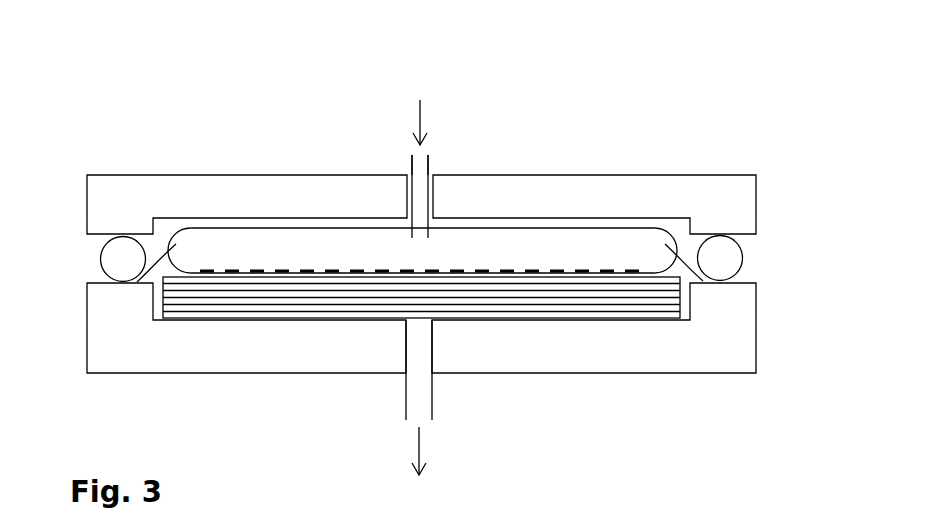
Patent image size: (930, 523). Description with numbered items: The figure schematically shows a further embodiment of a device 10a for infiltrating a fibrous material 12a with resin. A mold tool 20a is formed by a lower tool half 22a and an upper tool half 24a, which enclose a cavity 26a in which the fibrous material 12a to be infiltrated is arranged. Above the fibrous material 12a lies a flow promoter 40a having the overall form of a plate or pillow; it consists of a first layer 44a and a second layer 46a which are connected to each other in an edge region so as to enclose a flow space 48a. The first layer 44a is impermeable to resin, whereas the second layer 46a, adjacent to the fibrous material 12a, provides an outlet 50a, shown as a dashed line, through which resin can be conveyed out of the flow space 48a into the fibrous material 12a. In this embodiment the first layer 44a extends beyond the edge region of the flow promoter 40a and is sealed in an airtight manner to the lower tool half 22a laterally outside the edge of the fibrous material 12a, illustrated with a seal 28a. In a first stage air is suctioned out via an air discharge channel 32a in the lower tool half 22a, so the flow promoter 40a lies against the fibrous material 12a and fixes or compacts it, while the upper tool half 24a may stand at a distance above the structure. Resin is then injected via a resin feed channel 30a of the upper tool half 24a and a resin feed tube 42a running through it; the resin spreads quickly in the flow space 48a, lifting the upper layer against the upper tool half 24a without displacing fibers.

The device for infiltrating a fibrous material 10a is at (170, 78).
The fibrous material 12a is at (330, 300).
The mold tool 20a is at (722, 162).
The lower tool half 22a is at (626, 358).
The upper tool half 24a is at (590, 192).
The cavity 26a is at (168, 232).
The seal 28a is at (723, 267).
The resin feed channel 30a is at (435, 202).
The air discharge channel 32a is at (433, 353).
The flow promoter 40a is at (285, 245).
The resin feed tube 42a is at (429, 167).
The first layer 44a is at (208, 228).
The second layer 46a is at (225, 272).
The flow space 48a is at (347, 242).
The outlet 50a is at (496, 270).